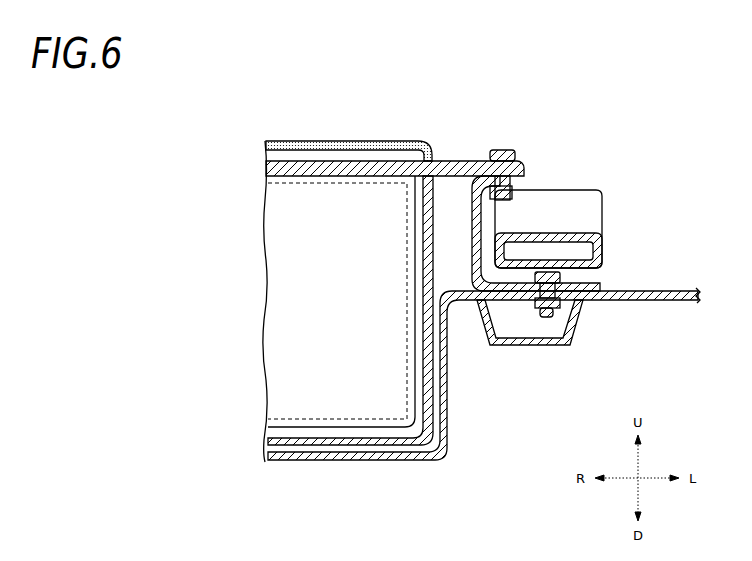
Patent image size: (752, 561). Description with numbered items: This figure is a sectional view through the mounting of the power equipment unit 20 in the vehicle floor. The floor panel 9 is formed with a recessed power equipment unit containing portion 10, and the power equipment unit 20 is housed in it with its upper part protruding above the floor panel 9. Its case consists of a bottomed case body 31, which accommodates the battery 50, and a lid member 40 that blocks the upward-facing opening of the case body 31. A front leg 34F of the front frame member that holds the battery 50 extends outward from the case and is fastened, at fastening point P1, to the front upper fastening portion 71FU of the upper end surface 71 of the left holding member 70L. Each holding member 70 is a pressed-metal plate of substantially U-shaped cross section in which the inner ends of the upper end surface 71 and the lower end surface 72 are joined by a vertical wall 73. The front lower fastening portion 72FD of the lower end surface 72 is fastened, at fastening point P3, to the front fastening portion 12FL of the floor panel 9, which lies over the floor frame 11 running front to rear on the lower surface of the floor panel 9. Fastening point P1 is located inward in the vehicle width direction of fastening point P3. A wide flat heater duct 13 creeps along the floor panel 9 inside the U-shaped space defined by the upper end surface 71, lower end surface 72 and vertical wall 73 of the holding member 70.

The power equipment unit 20 is at (305, 141).
The lid member 40 is at (388, 161).
The front leg 34F is at (448, 161).
The fastening point P1 is at (490, 162).
The front upper fastening portion 71FU is at (498, 150).
The upper end surface 71 is at (512, 141).
The front lower fastening portion 72FD is at (556, 262).
The heater duct 13 is at (577, 207).
The floor panel 9 is at (484, 374).
The fastening point P3 is at (563, 278).
The floor frame 11 is at (550, 340).
The lower end surface 72 is at (508, 300).
The front fastening portion 12FL is at (548, 318).
The left holding member 70L is at (472, 232).
The holding member 70 is at (460, 278).
The vertical wall 73 is at (470, 262).
The case body 31 is at (448, 398).
The power equipment unit containing portion 10 is at (320, 445).
The battery 50 is at (375, 460).